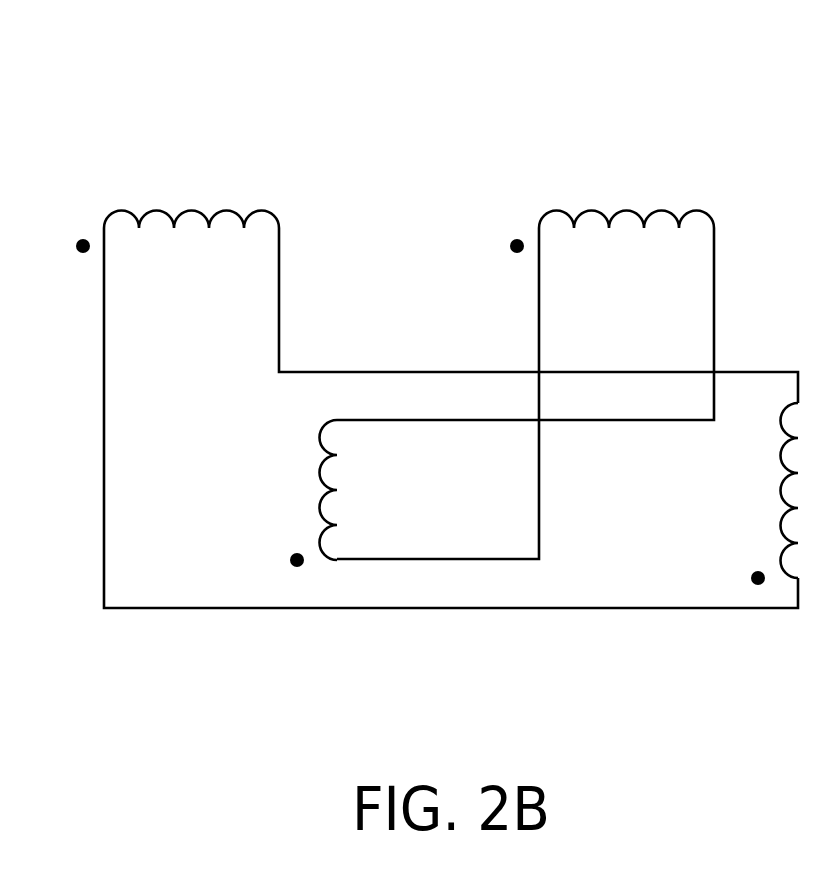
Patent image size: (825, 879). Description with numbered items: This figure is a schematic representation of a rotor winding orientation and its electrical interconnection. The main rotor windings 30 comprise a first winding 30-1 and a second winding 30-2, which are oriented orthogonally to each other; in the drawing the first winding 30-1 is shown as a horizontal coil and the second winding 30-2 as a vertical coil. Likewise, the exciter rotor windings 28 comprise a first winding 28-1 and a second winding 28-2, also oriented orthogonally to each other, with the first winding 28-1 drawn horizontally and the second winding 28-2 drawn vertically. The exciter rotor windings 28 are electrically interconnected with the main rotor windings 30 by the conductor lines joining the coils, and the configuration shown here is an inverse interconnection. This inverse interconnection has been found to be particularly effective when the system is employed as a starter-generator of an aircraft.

The main rotor windings 30 is at (206, 296).
The first winding 30-1 is at (158, 208).
The second winding 30-2 is at (318, 475).
The exciter rotor windings 28 is at (654, 305).
The first winding 28-1 is at (697, 208).
The second winding 28-2 is at (782, 525).